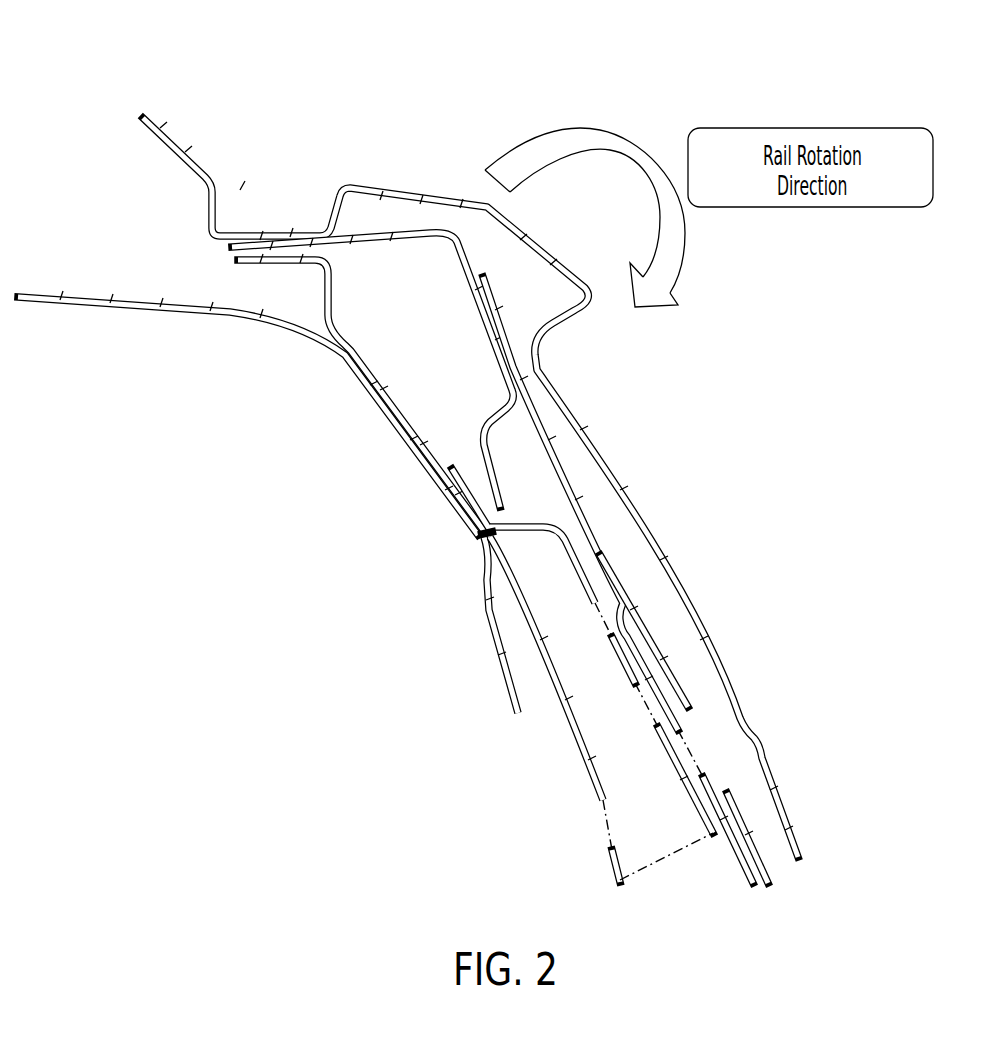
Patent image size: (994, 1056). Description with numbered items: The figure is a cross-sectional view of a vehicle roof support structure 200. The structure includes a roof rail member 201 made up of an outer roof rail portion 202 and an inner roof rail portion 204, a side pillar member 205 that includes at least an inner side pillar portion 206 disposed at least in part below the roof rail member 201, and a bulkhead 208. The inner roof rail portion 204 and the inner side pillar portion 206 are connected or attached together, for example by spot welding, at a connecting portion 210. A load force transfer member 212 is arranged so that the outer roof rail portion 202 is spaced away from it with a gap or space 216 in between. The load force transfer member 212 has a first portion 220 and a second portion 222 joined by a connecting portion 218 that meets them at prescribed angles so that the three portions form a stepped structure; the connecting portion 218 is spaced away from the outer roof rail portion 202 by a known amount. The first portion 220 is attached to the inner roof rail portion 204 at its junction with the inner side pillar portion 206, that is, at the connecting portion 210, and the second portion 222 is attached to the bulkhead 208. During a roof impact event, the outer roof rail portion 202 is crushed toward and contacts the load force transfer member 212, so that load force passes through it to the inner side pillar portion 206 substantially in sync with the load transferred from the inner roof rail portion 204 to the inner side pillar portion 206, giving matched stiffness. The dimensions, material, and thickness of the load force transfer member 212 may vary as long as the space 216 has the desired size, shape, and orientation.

The vehicle roof support structure 200 is at (498, 93).
The roof rail member 201 is at (323, 381).
The outer roof rail portion 202 is at (435, 240).
The inner roof rail portion 204 is at (326, 312).
The side pillar member 205 is at (450, 640).
The inner side pillar portion 206 is at (512, 707).
The bulkhead 208 is at (612, 872).
The connecting portion 210 is at (430, 517).
The load force transfer member 212 is at (458, 452).
The gap or space 216 is at (490, 522).
The connecting portion 218 is at (543, 523).
The first portion 220 is at (463, 478).
The second portion 222 is at (567, 543).